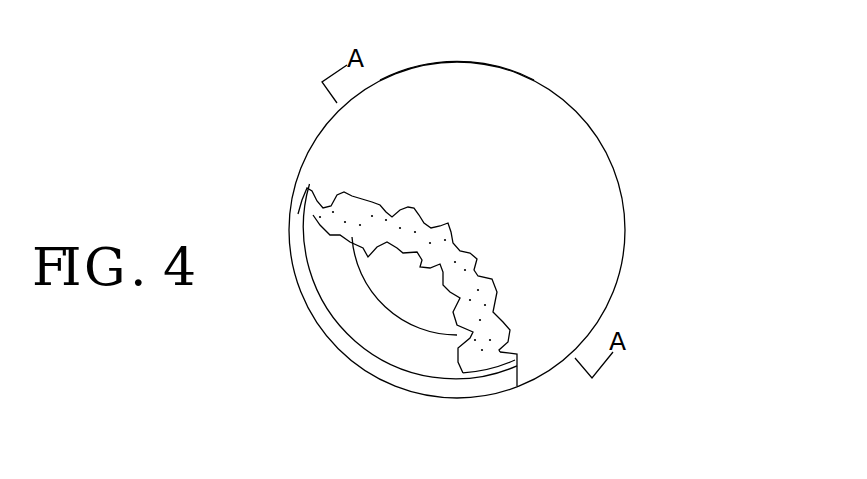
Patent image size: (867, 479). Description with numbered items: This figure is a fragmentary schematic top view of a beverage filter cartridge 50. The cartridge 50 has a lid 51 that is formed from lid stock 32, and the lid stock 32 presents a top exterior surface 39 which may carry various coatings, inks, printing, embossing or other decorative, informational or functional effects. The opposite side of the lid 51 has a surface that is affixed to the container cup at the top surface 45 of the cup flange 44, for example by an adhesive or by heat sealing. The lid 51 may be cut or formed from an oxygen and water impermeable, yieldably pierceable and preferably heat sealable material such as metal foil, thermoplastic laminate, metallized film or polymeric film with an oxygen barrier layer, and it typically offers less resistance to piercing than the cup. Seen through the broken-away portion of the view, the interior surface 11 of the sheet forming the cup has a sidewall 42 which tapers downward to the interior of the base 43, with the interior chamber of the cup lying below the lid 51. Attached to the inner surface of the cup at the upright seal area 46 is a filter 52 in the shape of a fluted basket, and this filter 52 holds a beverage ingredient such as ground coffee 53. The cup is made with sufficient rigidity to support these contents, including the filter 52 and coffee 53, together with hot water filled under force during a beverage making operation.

The interior surface 11 is at (357, 294).
The lid stock 32 is at (458, 60).
The top exterior surface 39 is at (498, 163).
The sidewall 42 is at (343, 314).
The base 43 is at (432, 302).
The cup flange 44 is at (378, 371).
The top surface 45 is at (344, 348).
The upright seal area 46 is at (417, 375).
The beverage filter cartridge 50 is at (642, 58).
The lid 51 is at (567, 163).
The filter 52 is at (308, 216).
The ground coffee 53 is at (488, 347).